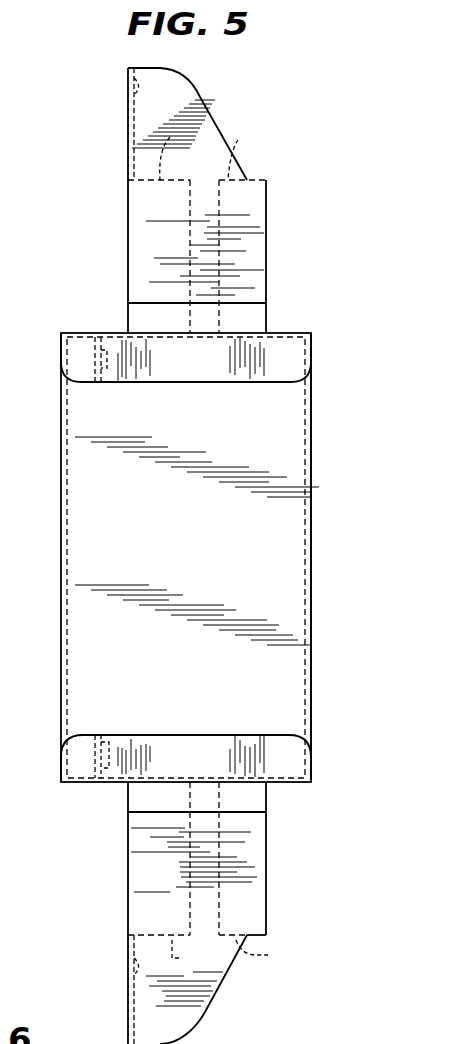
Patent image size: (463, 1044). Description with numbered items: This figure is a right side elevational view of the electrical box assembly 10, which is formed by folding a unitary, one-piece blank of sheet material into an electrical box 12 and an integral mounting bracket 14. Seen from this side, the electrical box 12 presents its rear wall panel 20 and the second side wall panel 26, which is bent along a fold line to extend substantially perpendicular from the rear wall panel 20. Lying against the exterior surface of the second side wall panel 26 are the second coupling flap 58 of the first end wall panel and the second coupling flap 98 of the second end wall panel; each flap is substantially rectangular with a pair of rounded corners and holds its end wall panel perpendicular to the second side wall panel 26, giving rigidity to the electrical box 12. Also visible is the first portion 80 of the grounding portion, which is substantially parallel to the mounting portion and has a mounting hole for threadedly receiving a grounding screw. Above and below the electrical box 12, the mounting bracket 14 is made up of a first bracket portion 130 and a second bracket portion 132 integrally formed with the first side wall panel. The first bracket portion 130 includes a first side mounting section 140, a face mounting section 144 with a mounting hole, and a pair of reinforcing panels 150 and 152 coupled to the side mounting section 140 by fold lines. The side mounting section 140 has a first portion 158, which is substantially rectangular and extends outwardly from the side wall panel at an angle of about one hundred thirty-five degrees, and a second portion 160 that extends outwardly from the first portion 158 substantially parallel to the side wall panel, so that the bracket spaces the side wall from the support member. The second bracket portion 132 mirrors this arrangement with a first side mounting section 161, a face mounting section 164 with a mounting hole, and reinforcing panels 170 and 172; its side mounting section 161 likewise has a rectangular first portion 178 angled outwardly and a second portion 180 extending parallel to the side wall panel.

The electrical box assembly 10 is at (90, 176).
The electrical box 12 is at (61, 420).
The mounting bracket 14 is at (278, 222).
The rear wall panel 20 is at (311, 555).
The second side wall panel 26 is at (206, 552).
The second coupling flap 58 is at (180, 382).
The first portion of grounding portion 80 is at (105, 740).
The second coupling flap 98 is at (172, 735).
The first bracket portion 130 is at (247, 110).
The second bracket portion 132 is at (258, 994).
The first side mounting section 140 is at (200, 98).
The face mounting section 144 is at (128, 80).
The reinforcing panel 150 is at (183, 153).
The reinforcing panel 152 is at (251, 153).
The first portion of side mounting section 158 is at (266, 318).
The second portion of side mounting section 160 is at (266, 268).
The first side mounting section 161 is at (205, 1014).
The face mounting section 164 is at (133, 963).
The reinforcing panel 170 is at (194, 957).
The reinforcing panel 172 is at (271, 957).
The first portion of side mounting section 178 is at (266, 805).
The second portion of side mounting section 180 is at (266, 862).